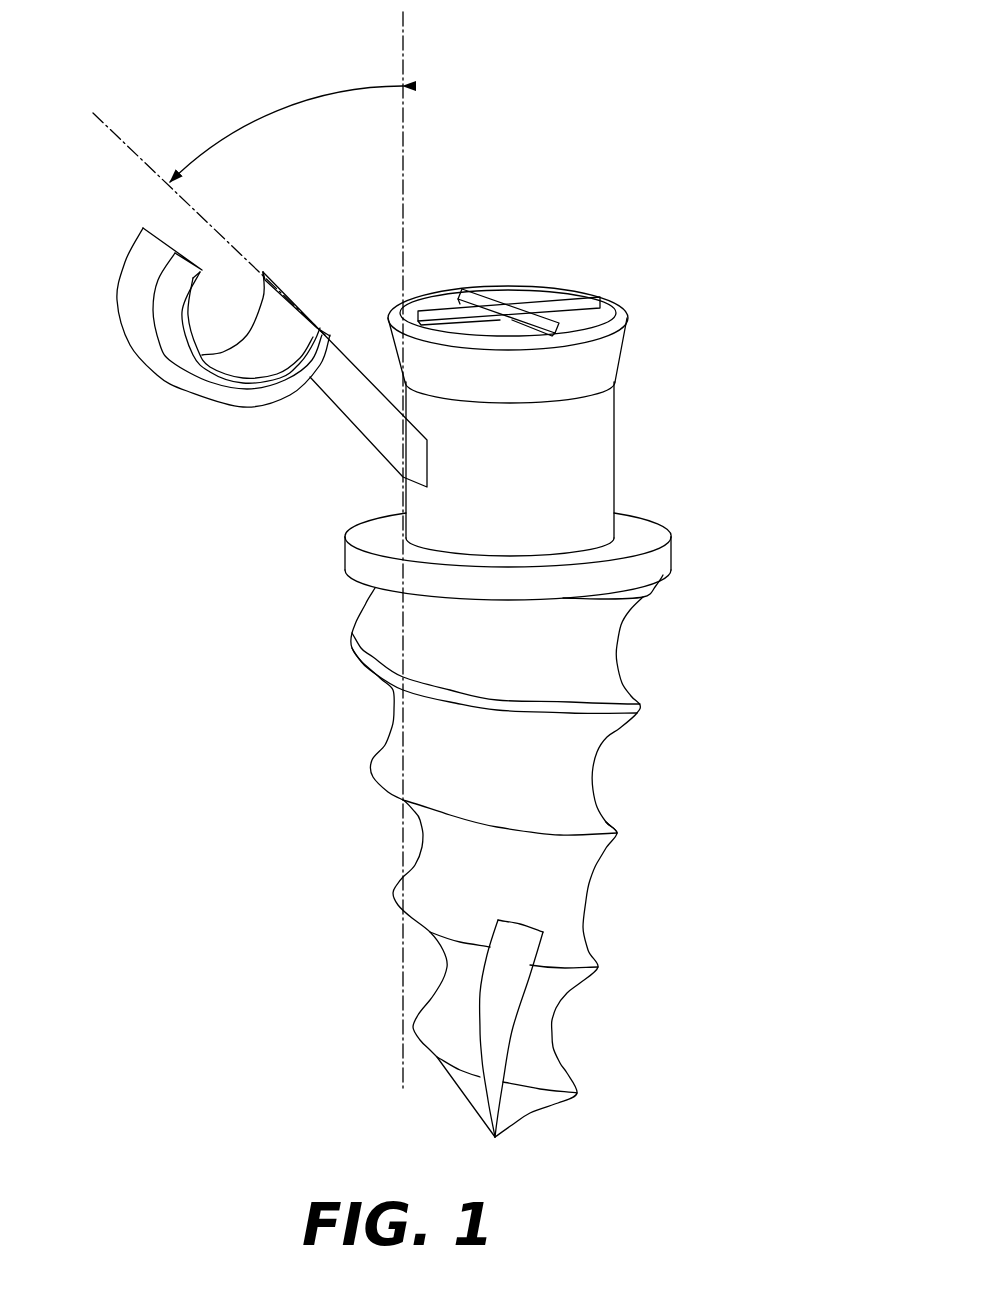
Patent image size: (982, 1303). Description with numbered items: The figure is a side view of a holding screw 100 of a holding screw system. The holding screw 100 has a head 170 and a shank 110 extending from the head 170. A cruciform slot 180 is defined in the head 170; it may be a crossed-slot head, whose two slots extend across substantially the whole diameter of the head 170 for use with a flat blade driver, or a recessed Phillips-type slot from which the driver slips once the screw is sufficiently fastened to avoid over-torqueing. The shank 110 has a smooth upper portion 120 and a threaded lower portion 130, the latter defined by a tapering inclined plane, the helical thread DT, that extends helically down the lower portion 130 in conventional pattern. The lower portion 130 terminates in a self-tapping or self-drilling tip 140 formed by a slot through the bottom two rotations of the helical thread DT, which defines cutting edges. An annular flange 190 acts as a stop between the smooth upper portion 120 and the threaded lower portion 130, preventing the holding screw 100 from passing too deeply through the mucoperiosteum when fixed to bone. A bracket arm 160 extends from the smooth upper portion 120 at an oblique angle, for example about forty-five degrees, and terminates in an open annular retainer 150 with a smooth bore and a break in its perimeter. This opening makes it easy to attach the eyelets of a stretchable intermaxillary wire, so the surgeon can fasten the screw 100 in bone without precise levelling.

The holding screw 100 is at (153, 92).
The shank 110 is at (566, 674).
The smooth upper portion 120 is at (598, 447).
The threaded lower portion 130 is at (575, 788).
The self-tapping or self-drilling tip 140 is at (505, 1007).
The open annular retainer 150 is at (120, 262).
The bracket arm 160 is at (370, 450).
The head 170 is at (508, 307).
The cruciform slot 180 is at (496, 300).
The annular flange 190 is at (673, 547).
The helical thread DT is at (617, 833).